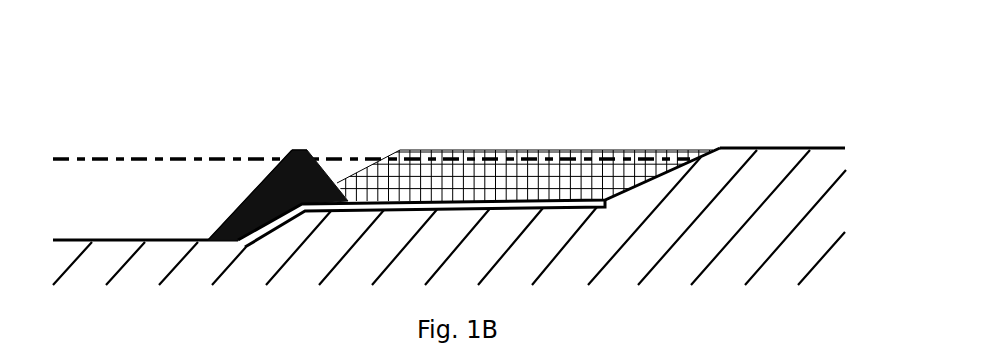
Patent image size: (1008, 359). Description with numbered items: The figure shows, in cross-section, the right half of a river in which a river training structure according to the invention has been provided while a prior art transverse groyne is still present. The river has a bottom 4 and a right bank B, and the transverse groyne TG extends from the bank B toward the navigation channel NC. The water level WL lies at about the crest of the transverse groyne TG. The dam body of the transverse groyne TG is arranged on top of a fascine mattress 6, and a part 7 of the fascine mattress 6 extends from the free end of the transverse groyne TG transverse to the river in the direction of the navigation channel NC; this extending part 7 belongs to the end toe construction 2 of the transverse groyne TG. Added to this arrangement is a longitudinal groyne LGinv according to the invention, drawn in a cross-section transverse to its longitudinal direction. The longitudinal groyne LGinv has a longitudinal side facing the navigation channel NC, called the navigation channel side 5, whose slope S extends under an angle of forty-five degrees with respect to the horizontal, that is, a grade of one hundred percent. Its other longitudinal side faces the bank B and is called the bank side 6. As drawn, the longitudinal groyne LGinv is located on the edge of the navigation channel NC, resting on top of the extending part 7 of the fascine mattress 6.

The end toe construction 2 is at (303, 227).
The bottom 4 is at (143, 265).
The navigation channel side 5 is at (248, 195).
The fascine mattress 6 is at (322, 165).
The extending part of the fascine mattress 7 is at (275, 227).
The water level WL is at (90, 158).
The navigation channel NC is at (145, 224).
The slope S is at (272, 172).
The longitudinal groyne LGinv is at (298, 167).
The transverse groyne TG is at (558, 172).
The bank B is at (742, 199).